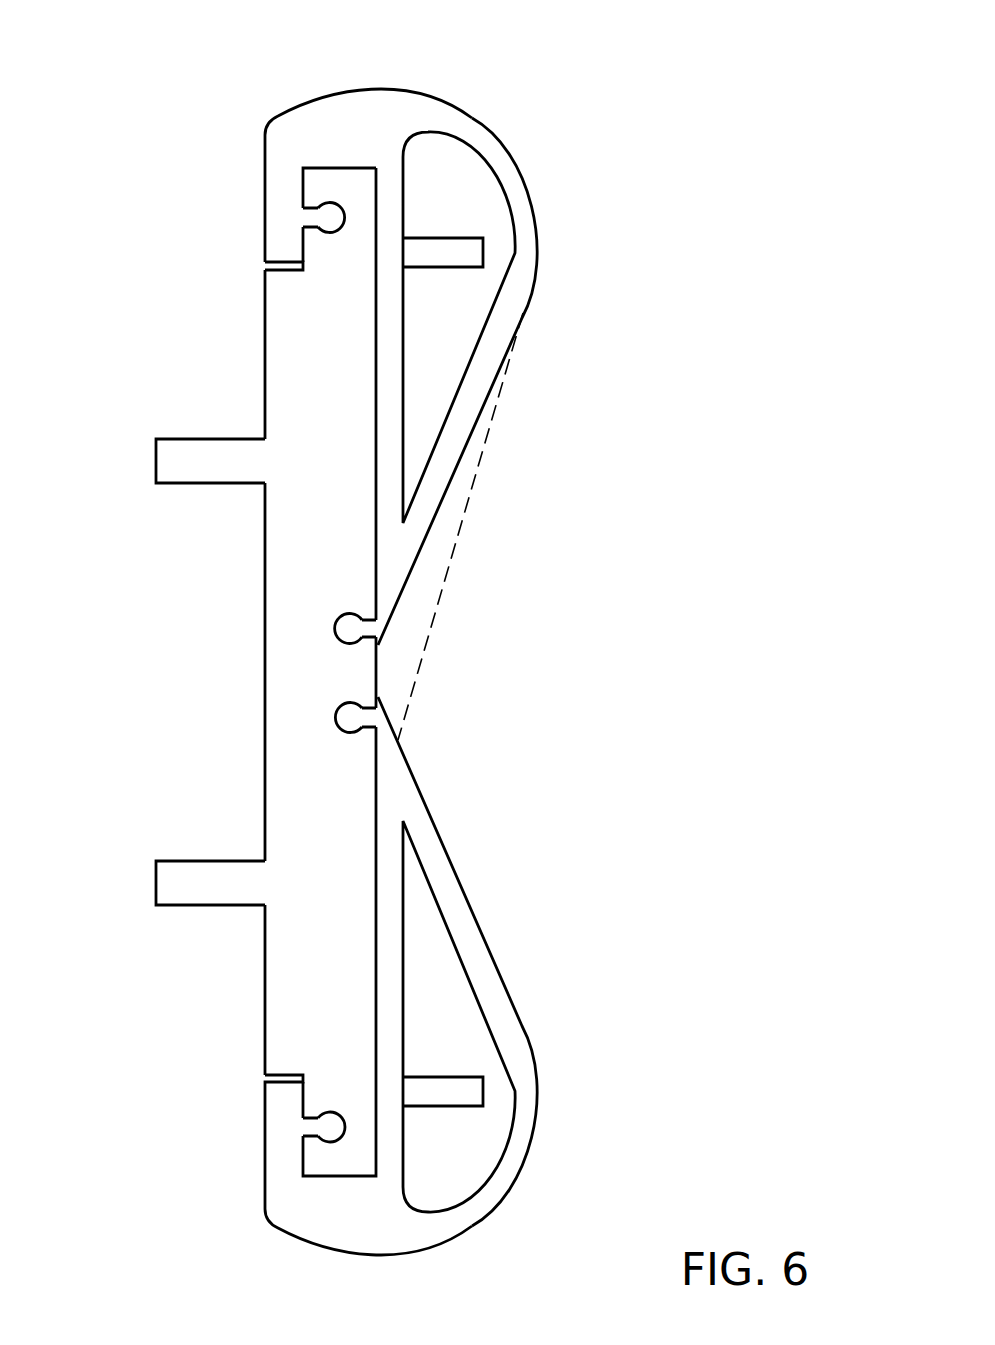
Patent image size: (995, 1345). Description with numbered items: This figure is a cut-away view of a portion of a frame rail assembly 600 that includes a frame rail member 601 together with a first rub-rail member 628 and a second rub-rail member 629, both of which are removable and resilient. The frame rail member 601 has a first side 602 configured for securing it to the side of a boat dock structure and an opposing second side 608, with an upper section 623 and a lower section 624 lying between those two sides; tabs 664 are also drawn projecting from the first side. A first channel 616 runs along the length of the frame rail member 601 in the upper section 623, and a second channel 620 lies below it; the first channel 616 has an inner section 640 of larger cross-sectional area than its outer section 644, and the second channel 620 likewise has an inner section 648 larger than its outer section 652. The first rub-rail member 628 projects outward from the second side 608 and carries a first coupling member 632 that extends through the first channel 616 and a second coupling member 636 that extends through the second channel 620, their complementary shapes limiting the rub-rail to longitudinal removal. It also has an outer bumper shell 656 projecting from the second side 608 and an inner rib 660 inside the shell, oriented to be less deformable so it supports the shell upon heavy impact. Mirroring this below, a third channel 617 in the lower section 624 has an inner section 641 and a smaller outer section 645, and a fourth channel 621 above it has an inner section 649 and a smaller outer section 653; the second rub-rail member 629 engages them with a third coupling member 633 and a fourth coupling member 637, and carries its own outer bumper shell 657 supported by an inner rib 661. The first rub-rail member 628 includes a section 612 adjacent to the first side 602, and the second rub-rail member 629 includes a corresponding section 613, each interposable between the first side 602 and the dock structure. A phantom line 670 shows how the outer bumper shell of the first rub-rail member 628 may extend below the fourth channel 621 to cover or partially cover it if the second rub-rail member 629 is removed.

The frame rail assembly 600 is at (680, 347).
The frame rail member 601 is at (171, 672).
The first side 602 is at (263, 286).
The second side 608 is at (378, 670).
The section 612 is at (324, 155).
The section 613 is at (250, 1152).
The first channel 616 is at (342, 230).
The third channel 617 is at (328, 1143).
The second channel 620 is at (351, 578).
The fourth channel 621 is at (318, 733).
The upper section 623 is at (330, 319).
The lower section 624 is at (210, 951).
The first rub-rail member 628 is at (504, 429).
The second rub-rail member 629 is at (511, 961).
The first coupling member 632 is at (395, 167).
The third coupling member 633 is at (326, 1085).
The second coupling member 636 is at (351, 566).
The fourth coupling member 637 is at (318, 733).
The inner section 640 is at (347, 217).
The inner section 641 is at (347, 1122).
The outer section 644 is at (308, 232).
The outer section 645 is at (310, 1117).
The inner section 648 is at (335, 622).
The inner section 649 is at (336, 725).
The outer section 652 is at (380, 652).
The outer section 653 is at (370, 728).
The outer bumper shell 656 is at (540, 248).
The outer bumper shell 657 is at (540, 1097).
The inner rib 660 is at (440, 268).
The inner rib 661 is at (462, 1078).
The side tabs 664 is at (183, 484).
The phantom line 670 is at (475, 493).